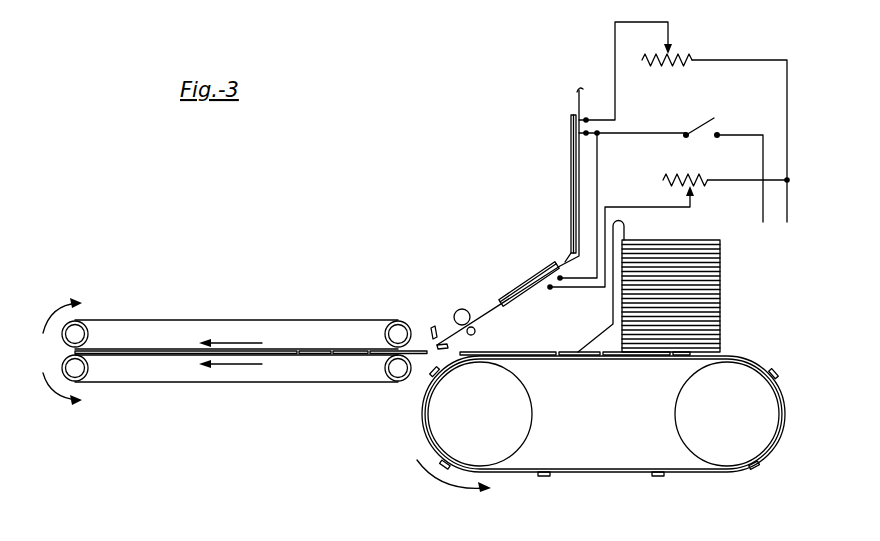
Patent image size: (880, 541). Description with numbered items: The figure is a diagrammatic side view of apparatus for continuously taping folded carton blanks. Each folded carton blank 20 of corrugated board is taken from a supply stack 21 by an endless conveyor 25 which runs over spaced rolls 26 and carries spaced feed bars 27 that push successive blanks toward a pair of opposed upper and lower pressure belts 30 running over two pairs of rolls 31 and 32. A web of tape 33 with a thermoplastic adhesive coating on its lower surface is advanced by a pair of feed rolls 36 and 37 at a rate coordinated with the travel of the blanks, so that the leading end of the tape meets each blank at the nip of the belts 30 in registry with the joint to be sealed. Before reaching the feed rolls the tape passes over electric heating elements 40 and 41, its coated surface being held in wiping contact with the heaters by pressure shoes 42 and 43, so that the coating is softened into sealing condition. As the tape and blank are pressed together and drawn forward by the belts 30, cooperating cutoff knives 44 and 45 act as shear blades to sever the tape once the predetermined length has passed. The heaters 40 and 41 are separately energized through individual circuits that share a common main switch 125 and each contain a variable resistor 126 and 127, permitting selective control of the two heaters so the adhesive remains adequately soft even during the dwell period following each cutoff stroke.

The folded carton blank 20 is at (132, 352).
The supply stack 21 is at (728, 291).
The endless conveyor 25 is at (613, 474).
The spaced rolls 26 is at (532, 416).
The feed bars 27 is at (545, 478).
The pressure belts 30 is at (238, 322).
The rolls 31 is at (388, 326).
The rolls 32 is at (62, 342).
The web of tape 33 is at (574, 96).
The feed roll 36 is at (456, 312).
The feed roll 37 is at (475, 331).
The electric heating element 40 is at (571, 164).
The electric heating element 41 is at (528, 298).
The pressure shoe 42 is at (571, 197).
The pressure shoe 43 is at (530, 286).
The cutoff knife 44 is at (432, 330).
The cutoff knife 45 is at (441, 351).
The main switch 125 is at (720, 128).
The variable resistor 126 is at (686, 56).
The variable resistor 127 is at (700, 192).